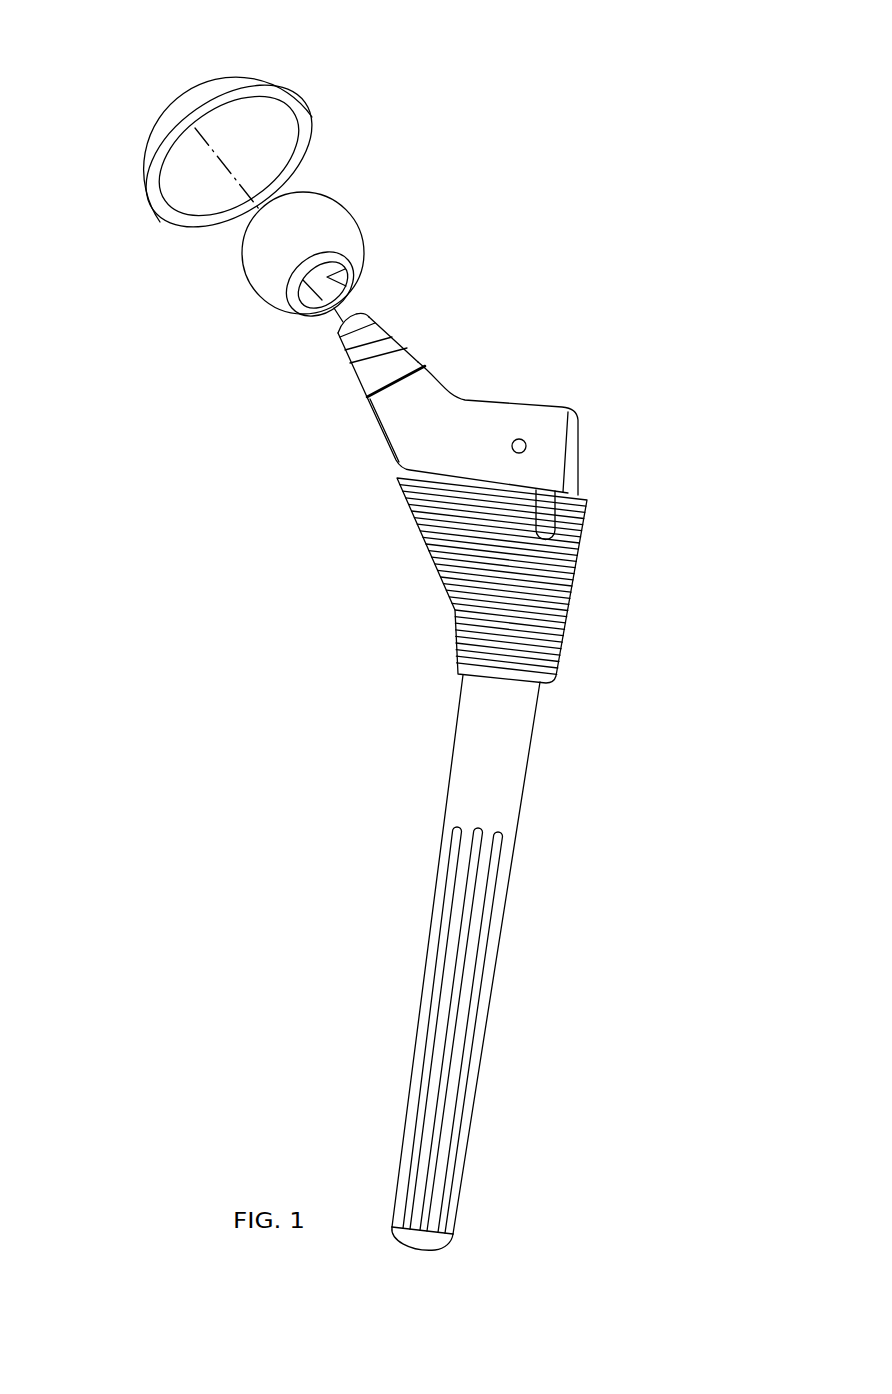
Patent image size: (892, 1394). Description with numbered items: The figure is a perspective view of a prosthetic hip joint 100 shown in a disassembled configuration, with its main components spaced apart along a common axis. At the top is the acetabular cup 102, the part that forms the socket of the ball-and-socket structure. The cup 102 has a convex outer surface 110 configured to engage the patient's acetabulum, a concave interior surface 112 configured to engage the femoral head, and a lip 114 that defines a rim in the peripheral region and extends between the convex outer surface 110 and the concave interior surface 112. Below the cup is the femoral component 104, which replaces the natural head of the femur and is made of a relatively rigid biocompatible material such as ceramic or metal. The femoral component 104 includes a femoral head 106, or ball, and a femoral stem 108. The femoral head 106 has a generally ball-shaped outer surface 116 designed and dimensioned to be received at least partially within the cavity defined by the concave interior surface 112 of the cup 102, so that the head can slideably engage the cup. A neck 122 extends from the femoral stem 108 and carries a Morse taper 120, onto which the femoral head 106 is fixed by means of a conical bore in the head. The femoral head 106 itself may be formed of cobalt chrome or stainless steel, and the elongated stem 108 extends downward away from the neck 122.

The prosthetic hip joint 100 is at (519, 180).
The acetabular cup 102 is at (136, 167).
The femoral component 104 is at (251, 482).
The femoral head 106 is at (338, 205).
The femoral stem 108 is at (448, 800).
The convex outer surface 110 is at (158, 95).
The concave interior surface 112 is at (168, 203).
The lip 114 is at (195, 224).
The ball-shaped outer surface 116 is at (245, 277).
The Morse taper 120 is at (346, 356).
The neck 122 is at (445, 382).